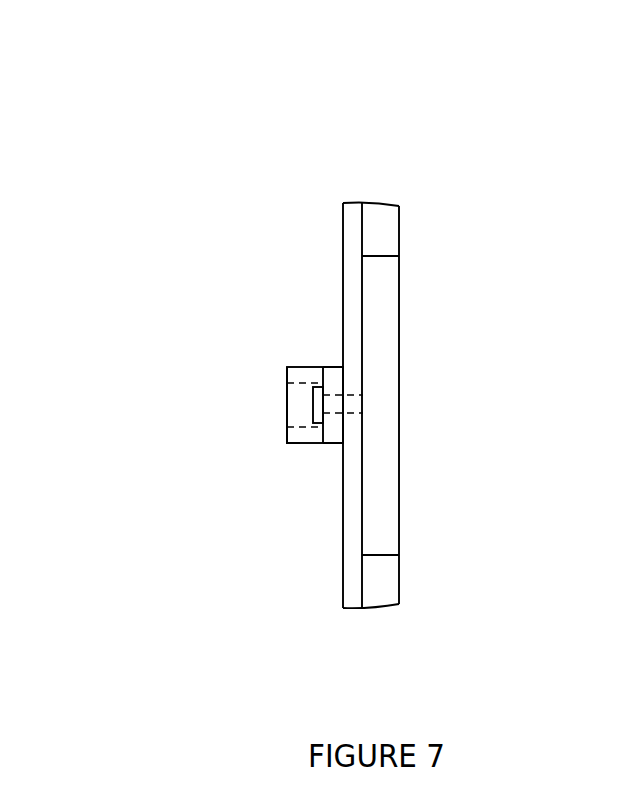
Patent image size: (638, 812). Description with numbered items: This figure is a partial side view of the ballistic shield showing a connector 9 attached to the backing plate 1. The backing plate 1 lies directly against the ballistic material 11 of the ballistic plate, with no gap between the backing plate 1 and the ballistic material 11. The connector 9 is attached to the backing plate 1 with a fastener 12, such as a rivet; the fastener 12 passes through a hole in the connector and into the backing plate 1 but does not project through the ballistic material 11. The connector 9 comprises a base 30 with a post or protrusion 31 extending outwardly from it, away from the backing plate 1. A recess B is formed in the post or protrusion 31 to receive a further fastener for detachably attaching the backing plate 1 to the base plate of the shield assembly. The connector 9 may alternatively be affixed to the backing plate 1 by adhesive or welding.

The backing plate 1 is at (348, 212).
The ballistic material 11 is at (385, 327).
The connector 9 is at (287, 371).
The fastener 12 is at (312, 402).
The base 30 is at (333, 435).
The post or protrusion 31 is at (313, 367).
The recess B is at (289, 432).